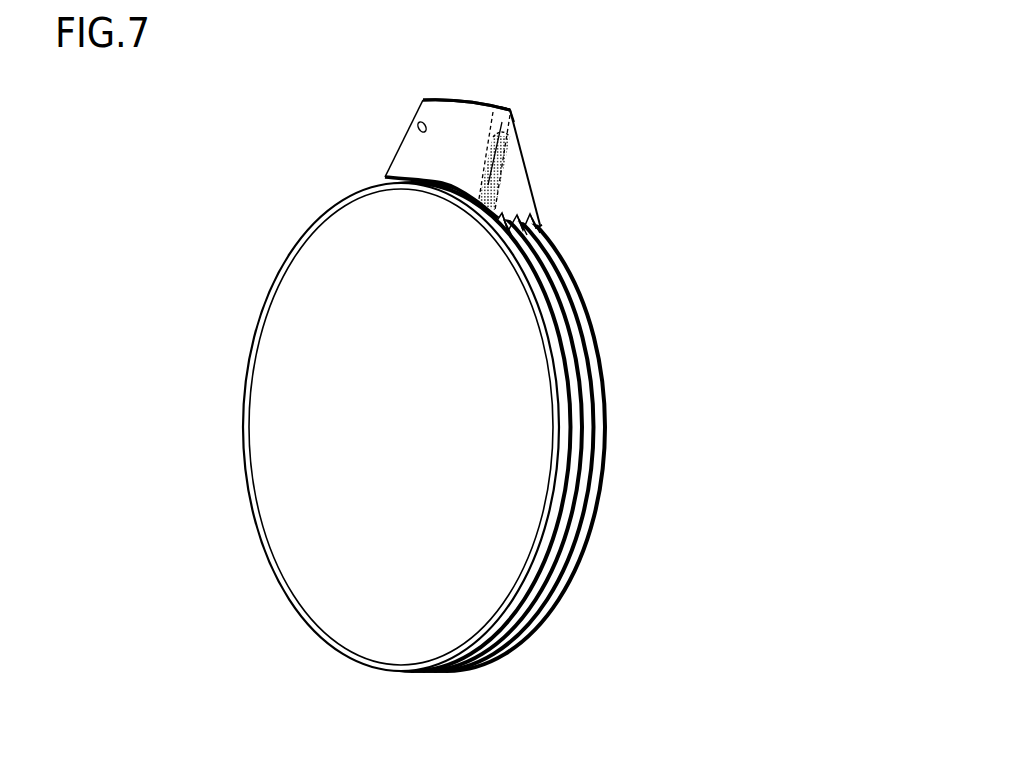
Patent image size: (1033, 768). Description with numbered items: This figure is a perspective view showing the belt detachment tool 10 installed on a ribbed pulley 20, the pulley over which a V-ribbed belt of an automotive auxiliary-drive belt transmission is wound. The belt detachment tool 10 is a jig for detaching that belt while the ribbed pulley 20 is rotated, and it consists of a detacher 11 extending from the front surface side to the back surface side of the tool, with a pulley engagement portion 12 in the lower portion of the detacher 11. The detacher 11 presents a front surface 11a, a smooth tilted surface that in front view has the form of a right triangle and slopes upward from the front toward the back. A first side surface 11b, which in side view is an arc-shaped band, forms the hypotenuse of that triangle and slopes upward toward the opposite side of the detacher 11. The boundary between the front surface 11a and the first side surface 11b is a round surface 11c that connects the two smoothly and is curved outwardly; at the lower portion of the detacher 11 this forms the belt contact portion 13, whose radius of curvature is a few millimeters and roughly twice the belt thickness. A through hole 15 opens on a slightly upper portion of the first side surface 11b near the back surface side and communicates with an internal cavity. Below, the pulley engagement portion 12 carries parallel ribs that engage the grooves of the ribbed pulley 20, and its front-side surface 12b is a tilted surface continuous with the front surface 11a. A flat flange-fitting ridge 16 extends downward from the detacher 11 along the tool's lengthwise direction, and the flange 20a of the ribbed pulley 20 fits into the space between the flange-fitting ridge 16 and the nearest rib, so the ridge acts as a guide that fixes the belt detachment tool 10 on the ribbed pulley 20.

The belt detachment tool 10 is at (443, 100).
The detacher 11 is at (423, 148).
The front surface 11a is at (513, 160).
The first side surface 11b is at (473, 117).
The round surface 11c is at (510, 109).
The pulley engagement portion 12 is at (543, 226).
The surface of the pulley engagement portion 12b is at (508, 219).
The belt contact portion 13 is at (486, 173).
The through hole 15 is at (415, 124).
The flange-fitting ridge 16 is at (533, 217).
The ribbed pulley 20 is at (277, 447).
The flange 20a is at (590, 313).